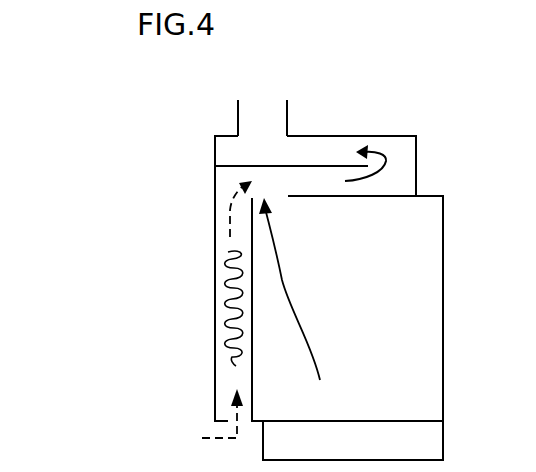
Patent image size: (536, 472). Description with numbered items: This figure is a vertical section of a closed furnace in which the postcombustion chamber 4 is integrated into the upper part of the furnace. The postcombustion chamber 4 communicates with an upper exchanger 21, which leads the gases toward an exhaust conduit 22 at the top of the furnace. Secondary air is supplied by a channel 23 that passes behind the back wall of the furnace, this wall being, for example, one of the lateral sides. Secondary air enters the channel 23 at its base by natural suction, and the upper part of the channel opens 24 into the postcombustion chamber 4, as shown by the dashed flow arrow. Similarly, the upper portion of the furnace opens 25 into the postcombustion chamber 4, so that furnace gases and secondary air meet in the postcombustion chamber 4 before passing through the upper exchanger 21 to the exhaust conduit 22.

The upper exchanger 21 is at (364, 118).
The exhaust conduit 22 is at (264, 122).
The postcombustion chamber 4 is at (265, 187).
The opening of the channel into the postcombustion chamber 24 is at (250, 198).
The opening of the furnace into the postcombustion chamber 25 is at (277, 200).
The channel 23 is at (228, 373).